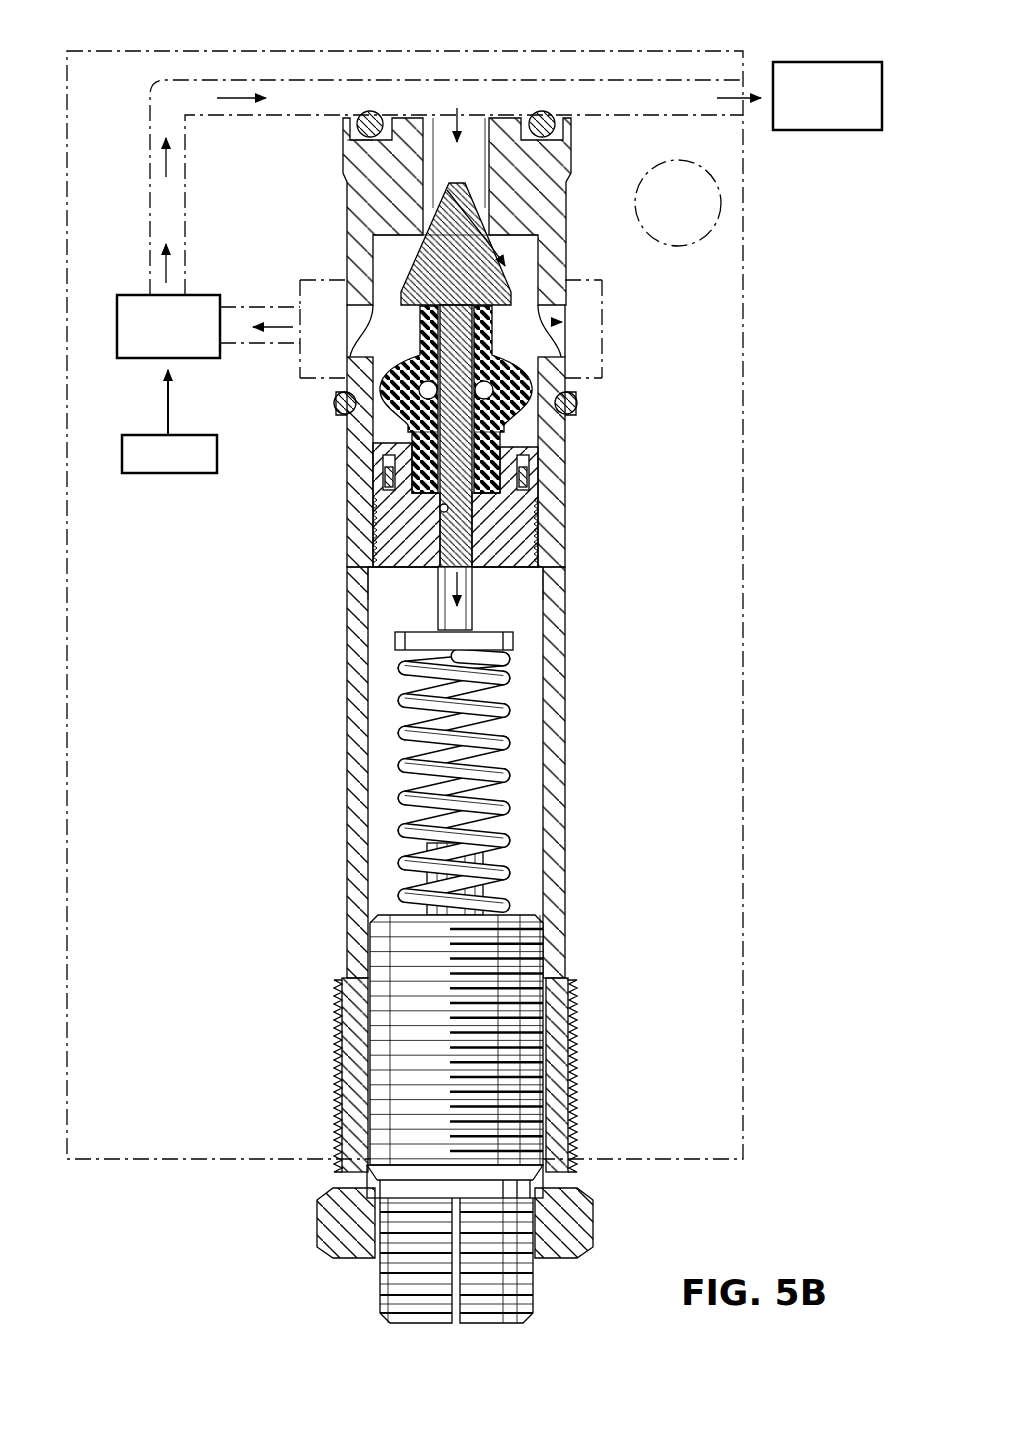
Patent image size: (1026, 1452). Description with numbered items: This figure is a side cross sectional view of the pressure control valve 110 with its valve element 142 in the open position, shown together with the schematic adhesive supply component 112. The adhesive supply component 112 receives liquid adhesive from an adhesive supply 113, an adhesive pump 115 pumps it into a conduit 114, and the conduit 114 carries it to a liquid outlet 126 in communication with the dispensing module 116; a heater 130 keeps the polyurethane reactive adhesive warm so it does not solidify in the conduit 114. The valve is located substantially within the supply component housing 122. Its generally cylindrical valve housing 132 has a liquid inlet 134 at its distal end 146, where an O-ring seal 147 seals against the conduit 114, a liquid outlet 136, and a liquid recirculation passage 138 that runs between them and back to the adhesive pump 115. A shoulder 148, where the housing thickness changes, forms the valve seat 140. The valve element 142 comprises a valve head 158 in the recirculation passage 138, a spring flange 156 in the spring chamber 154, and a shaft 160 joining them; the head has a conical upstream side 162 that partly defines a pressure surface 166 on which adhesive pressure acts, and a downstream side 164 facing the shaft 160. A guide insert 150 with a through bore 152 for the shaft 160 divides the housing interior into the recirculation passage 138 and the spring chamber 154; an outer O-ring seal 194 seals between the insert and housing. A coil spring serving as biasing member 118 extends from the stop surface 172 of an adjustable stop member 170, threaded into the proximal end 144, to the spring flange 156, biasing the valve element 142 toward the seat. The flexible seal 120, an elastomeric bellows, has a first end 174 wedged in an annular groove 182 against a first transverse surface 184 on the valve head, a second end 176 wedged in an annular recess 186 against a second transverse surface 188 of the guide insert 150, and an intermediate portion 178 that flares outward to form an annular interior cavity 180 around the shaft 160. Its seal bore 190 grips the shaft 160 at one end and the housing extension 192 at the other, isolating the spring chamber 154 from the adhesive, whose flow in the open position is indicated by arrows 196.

The pressure control valve 110 is at (657, 464).
The adhesive supply component 112 is at (754, 275).
The adhesive supply 113 is at (137, 435).
The conduit 114 is at (150, 146).
The adhesive pump 115 is at (130, 295).
The dispensing module 116 is at (808, 62).
The biasing member 118 is at (505, 772).
The flexible seal 120 is at (528, 423).
The supply component housing 122 is at (102, 51).
The liquid outlet 126 is at (740, 107).
The heater 130 is at (679, 247).
The valve housing 132 is at (347, 757).
The liquid inlet 134 is at (472, 128).
The liquid outlet 136 is at (345, 352).
The liquid recirculation passage 138 is at (228, 306).
The valve seat 140 is at (343, 190).
The valve element 142 is at (484, 593).
The proximal end 144 is at (317, 1222).
The distal end 146 is at (390, 116).
The O-ring seal 147 is at (368, 137).
The shoulder 148 is at (370, 282).
The guide insert 150 is at (523, 521).
The through bore 152 is at (447, 513).
The spring chamber 154 is at (520, 680).
The spring flange 156 is at (395, 643).
The valve head 158 is at (490, 205).
The shaft 160 is at (440, 585).
The upstream side 162 is at (512, 240).
The downstream side 164 is at (362, 352).
The pressure surface 166 is at (408, 268).
The adjustable stop member 170 is at (387, 957).
The stop surface 172 is at (387, 913).
The first end 174 is at (556, 318).
The second end 176 is at (527, 462).
The intermediate portion 178 is at (347, 397).
The annular interior cavity 180 is at (572, 383).
The annular groove 182 is at (565, 300).
The first transverse surface 184 is at (480, 300).
The annular recess 186 is at (388, 455).
The second transverse surface 188 is at (437, 515).
The seal bore 190 is at (450, 305).
The housing extension 192 is at (425, 434).
The outer O-ring seal 194 is at (527, 480).
The arrows 196 is at (340, 316).